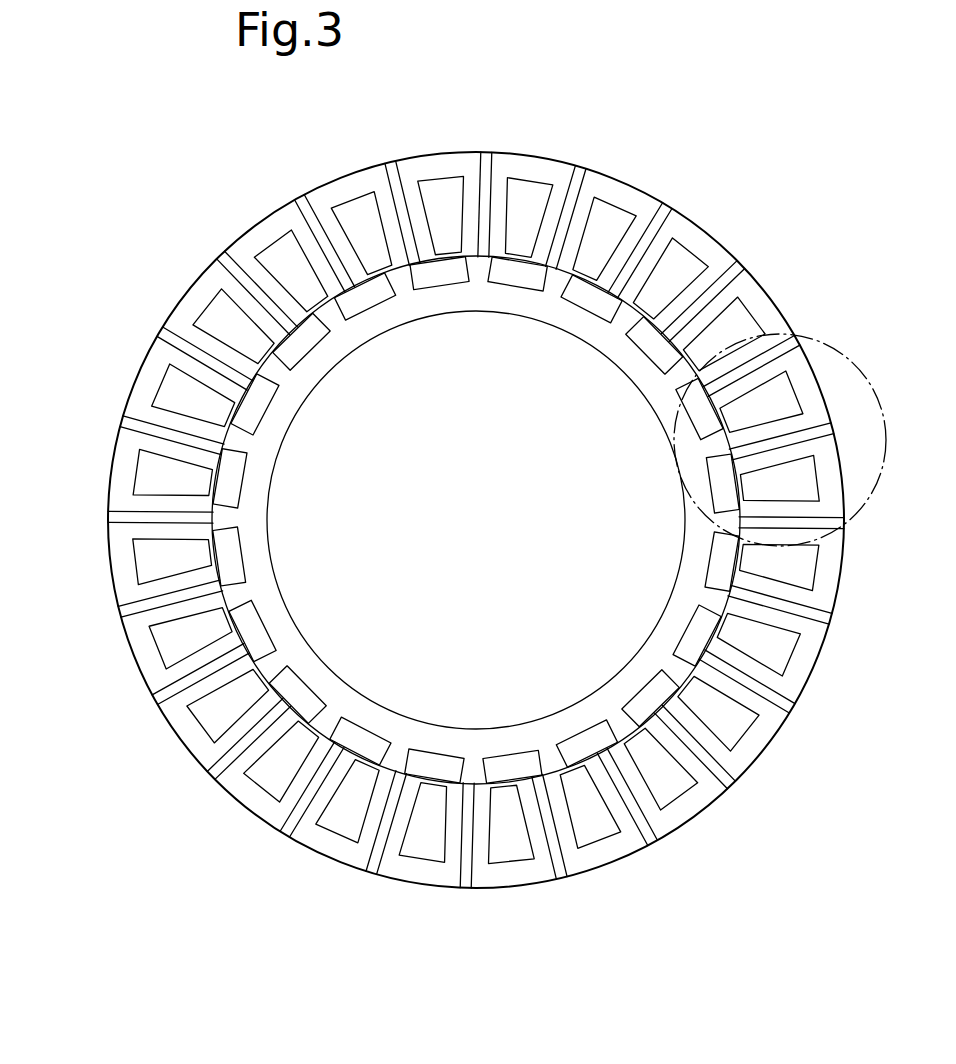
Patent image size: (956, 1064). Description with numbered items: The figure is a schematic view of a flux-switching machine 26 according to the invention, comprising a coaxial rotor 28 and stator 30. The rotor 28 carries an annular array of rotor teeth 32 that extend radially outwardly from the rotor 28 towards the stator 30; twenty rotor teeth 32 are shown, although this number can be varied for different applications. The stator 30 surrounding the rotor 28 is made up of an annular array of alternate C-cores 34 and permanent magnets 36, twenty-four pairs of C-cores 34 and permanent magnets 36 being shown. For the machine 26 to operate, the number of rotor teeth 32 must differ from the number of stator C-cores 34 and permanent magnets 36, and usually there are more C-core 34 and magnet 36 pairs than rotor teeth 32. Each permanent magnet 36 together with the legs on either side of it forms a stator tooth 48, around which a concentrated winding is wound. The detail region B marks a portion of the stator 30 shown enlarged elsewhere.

The flux-switching machine 26 is at (207, 188).
The rotor 28 is at (397, 316).
The stator 30 is at (178, 293).
The rotor teeth 32 is at (242, 440).
The C-cores 34 is at (758, 305).
The permanent magnets 36 is at (660, 222).
The stator tooth 48 is at (138, 730).
The detail B is at (688, 405).